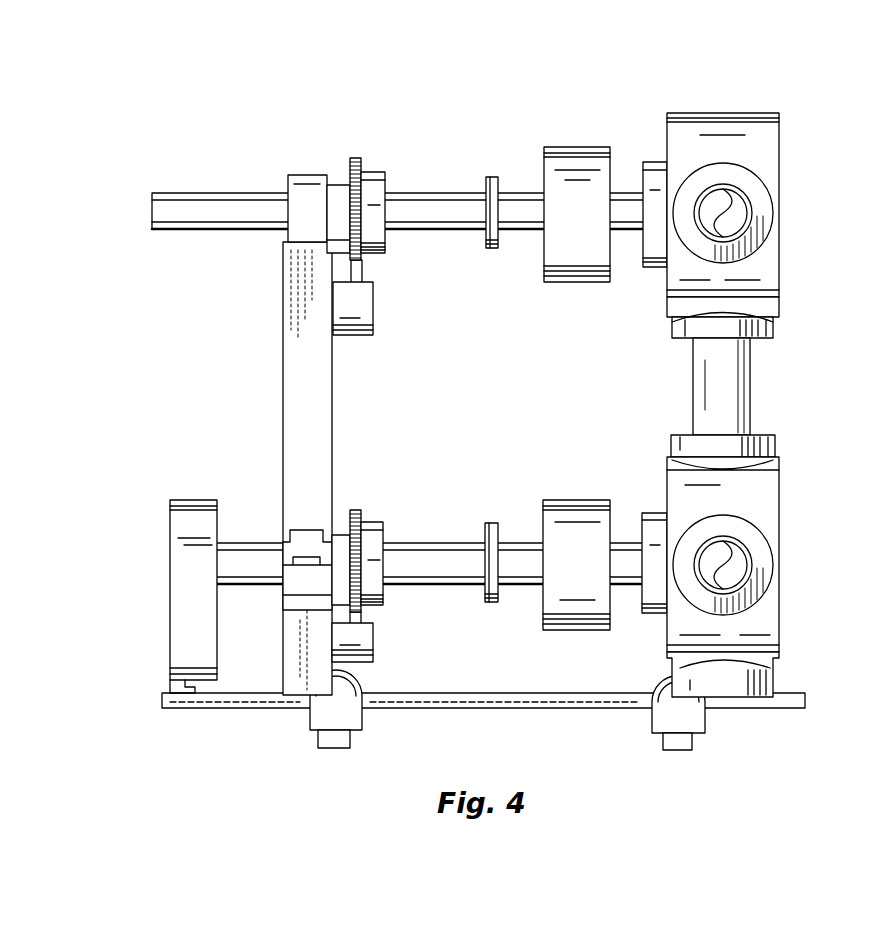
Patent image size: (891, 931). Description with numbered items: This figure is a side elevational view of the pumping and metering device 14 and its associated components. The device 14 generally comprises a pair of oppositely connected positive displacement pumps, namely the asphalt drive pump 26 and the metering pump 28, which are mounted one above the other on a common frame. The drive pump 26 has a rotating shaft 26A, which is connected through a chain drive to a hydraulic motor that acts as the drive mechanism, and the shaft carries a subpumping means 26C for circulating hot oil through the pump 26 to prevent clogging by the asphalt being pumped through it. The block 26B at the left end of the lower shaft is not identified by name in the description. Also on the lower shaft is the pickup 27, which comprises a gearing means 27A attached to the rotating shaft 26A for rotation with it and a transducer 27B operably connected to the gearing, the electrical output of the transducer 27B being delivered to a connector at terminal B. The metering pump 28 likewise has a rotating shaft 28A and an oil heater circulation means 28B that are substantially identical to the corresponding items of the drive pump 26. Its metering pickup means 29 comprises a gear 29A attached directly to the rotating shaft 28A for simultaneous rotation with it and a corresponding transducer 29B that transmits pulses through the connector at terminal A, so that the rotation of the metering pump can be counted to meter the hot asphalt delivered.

The pumping and metering device 14 is at (610, 123).
The positive displacement pump 26 is at (778, 462).
The rotating shaft 26A is at (455, 584).
The drive motor block 26B is at (212, 500).
The subpumping means 26C is at (572, 632).
The pickup 27 is at (391, 633).
The gearing means 27A is at (356, 510).
The transducer 27B is at (372, 652).
The metering pump 28 is at (775, 124).
The rotating shaft 28A is at (455, 231).
The oil heater circulation means 28B is at (568, 283).
The metering pickup means 29 is at (397, 256).
The gear 29A is at (356, 158).
The transducer 29B is at (376, 308).